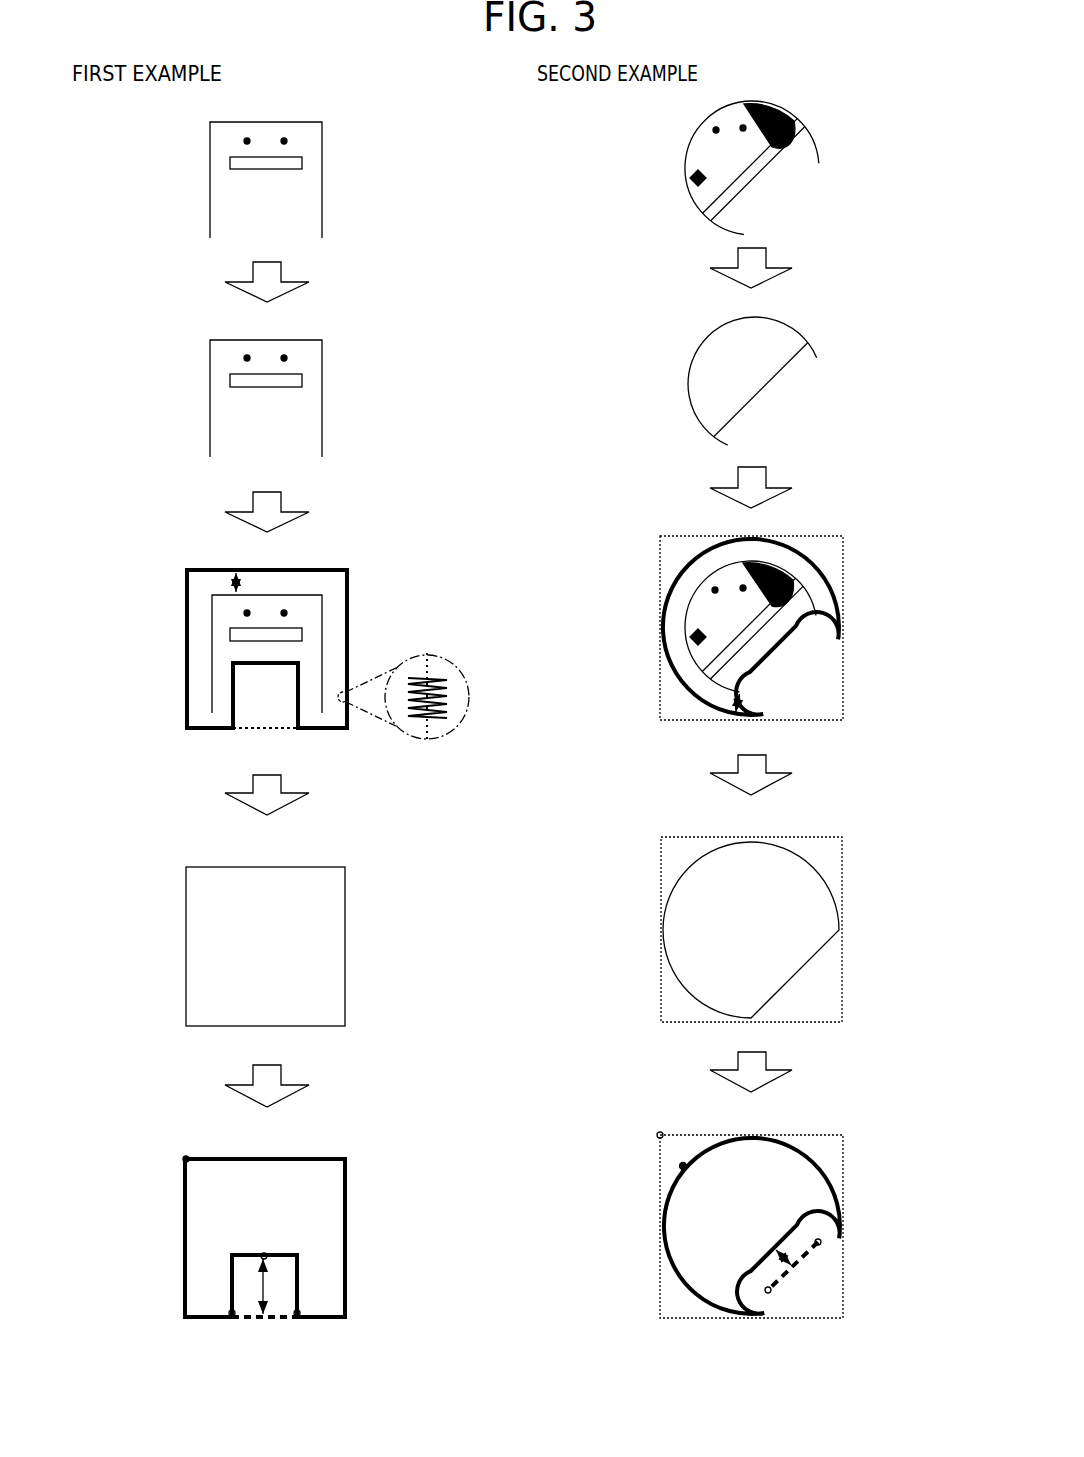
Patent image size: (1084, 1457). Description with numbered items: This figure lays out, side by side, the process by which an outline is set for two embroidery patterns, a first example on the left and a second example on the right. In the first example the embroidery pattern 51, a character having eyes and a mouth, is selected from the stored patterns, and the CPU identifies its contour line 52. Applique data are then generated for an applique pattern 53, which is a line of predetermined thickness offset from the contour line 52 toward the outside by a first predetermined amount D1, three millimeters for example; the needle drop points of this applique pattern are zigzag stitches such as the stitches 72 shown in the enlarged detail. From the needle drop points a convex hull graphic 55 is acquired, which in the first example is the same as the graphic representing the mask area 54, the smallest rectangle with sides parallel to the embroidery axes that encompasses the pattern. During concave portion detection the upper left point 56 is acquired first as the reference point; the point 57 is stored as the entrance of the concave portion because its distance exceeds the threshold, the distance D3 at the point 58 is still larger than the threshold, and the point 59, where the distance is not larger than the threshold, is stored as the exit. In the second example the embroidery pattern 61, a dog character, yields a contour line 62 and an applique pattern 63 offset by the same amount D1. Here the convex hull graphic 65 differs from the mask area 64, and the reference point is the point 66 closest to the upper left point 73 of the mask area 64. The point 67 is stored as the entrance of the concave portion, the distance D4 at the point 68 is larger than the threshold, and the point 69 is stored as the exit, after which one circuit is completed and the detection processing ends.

The embroidery pattern 51 is at (338, 177).
The contour line 52 is at (336, 407).
The applique pattern 53 is at (350, 672).
The mask area 54 is at (276, 1321).
The convex hull graphic 55 is at (348, 921).
The upper left point 56 is at (187, 1159).
The point 57 is at (299, 1315).
The point 58 is at (265, 1253).
The point 59 is at (234, 1315).
The embroidery pattern 61 is at (839, 164).
The contour line 62 is at (833, 376).
The applique pattern 63 is at (839, 591).
The mask area 64 is at (848, 889).
The convex hull graphic 65 is at (816, 861).
The point 66 is at (684, 1163).
The point 67 is at (821, 1243).
The point 68 is at (797, 1267).
The point 69 is at (771, 1290).
The stitches 72 is at (446, 667).
The upper left point 73 is at (660, 1132).
The first predetermined amount D1 is at (234, 576).
The distance D3 is at (260, 1283).
The distance D4 is at (782, 1256).